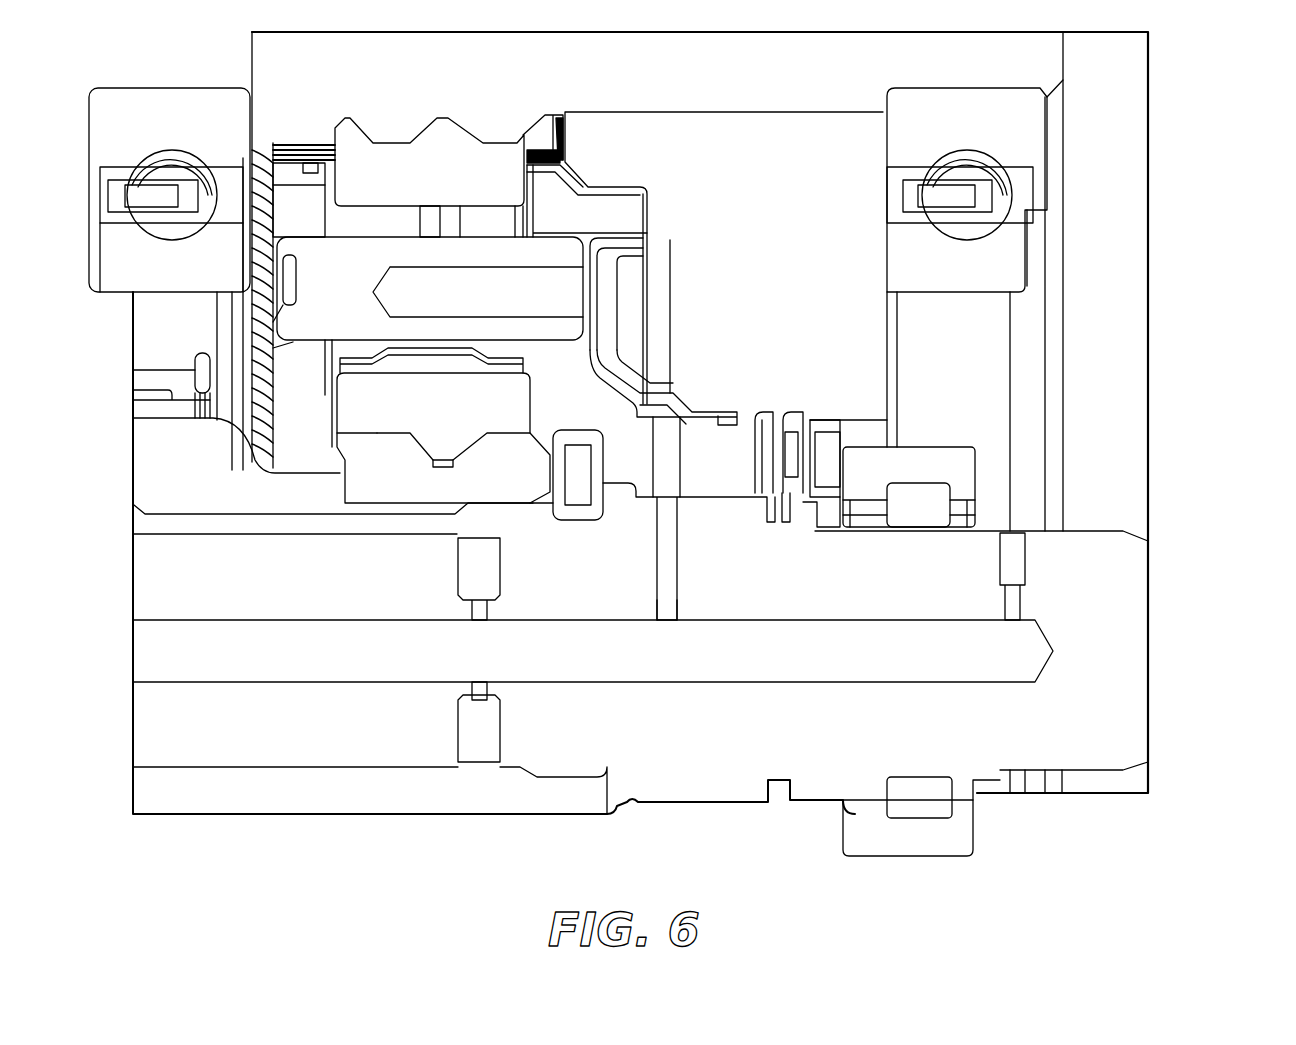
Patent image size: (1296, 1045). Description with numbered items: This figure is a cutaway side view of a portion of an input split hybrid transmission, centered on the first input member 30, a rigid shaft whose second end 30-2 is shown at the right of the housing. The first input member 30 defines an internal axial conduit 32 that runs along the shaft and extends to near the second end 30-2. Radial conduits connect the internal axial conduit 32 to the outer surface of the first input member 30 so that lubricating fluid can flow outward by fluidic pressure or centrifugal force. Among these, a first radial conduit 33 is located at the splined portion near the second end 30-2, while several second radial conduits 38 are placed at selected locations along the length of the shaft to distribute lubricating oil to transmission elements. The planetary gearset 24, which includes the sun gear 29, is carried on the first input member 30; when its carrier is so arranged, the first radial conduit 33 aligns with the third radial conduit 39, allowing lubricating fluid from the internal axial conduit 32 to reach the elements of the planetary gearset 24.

The planetary gearset 24 is at (352, 153).
The sun gear 29 is at (742, 437).
The first input member 30 is at (1083, 602).
The second end 30-2 is at (1150, 683).
The internal axial conduit 32 is at (693, 683).
The first radial conduit 33 is at (668, 603).
The second radial conduits 38 is at (452, 578).
The third radial conduit 39 is at (668, 468).